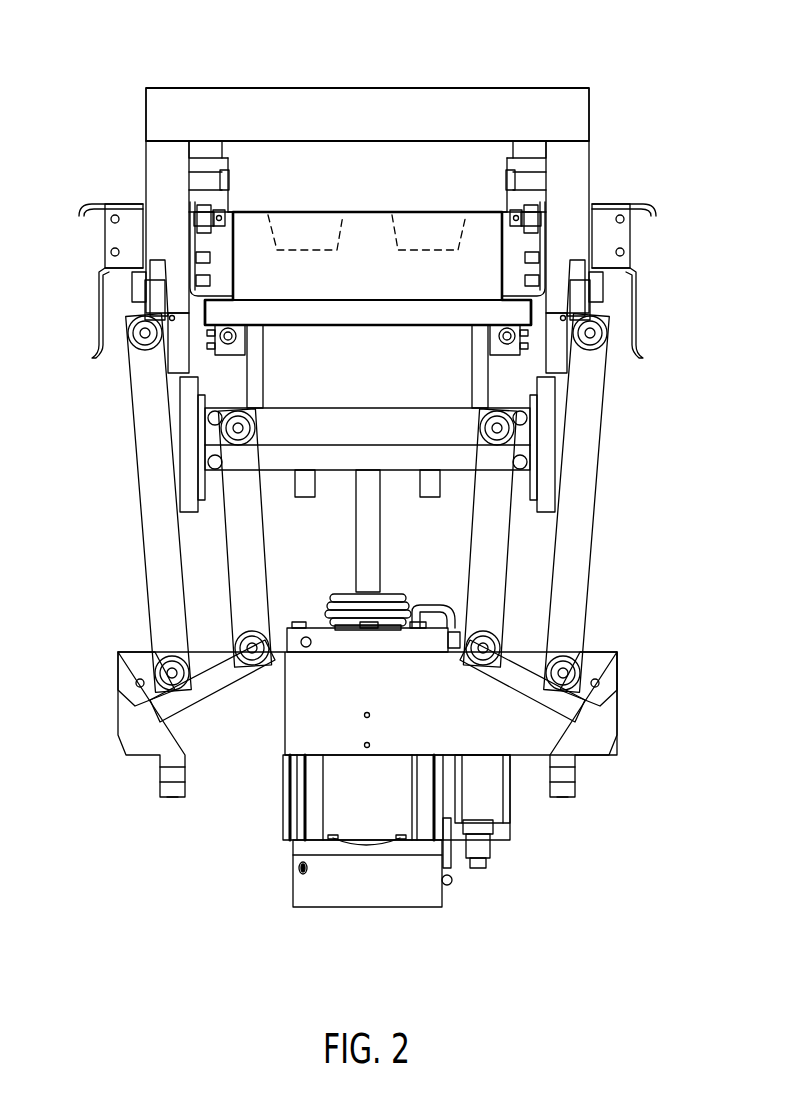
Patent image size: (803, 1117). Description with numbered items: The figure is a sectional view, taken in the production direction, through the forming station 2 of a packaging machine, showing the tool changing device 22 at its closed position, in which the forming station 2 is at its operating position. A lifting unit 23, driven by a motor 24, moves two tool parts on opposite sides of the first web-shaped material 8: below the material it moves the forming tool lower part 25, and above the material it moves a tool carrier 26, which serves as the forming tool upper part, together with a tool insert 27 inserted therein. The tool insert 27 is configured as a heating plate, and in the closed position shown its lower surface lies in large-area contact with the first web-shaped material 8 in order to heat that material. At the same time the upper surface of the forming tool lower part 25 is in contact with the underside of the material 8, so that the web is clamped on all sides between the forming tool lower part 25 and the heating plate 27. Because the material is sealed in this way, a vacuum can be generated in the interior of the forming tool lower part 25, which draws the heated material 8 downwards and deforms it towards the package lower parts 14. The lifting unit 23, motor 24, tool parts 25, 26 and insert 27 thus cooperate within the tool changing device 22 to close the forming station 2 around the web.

The forming station 2 is at (460, 58).
The first web-shaped material 8 is at (258, 212).
The package lower parts 14 is at (431, 255).
The tool changing device 22 is at (103, 446).
The lifting unit 23 is at (443, 415).
The motor 24 is at (342, 805).
The forming tool lower part 25 is at (478, 303).
The tool carrier 26 is at (569, 108).
The tool insert 27 is at (473, 174).